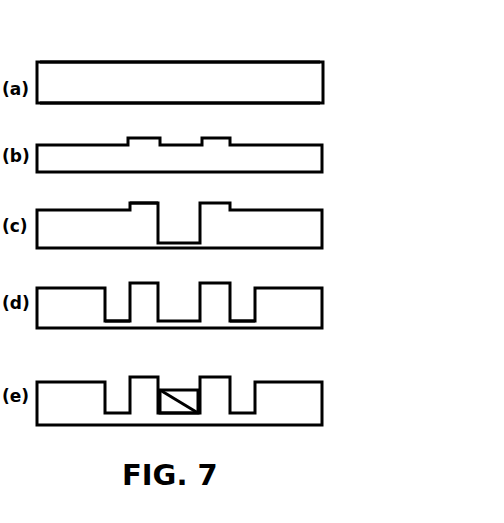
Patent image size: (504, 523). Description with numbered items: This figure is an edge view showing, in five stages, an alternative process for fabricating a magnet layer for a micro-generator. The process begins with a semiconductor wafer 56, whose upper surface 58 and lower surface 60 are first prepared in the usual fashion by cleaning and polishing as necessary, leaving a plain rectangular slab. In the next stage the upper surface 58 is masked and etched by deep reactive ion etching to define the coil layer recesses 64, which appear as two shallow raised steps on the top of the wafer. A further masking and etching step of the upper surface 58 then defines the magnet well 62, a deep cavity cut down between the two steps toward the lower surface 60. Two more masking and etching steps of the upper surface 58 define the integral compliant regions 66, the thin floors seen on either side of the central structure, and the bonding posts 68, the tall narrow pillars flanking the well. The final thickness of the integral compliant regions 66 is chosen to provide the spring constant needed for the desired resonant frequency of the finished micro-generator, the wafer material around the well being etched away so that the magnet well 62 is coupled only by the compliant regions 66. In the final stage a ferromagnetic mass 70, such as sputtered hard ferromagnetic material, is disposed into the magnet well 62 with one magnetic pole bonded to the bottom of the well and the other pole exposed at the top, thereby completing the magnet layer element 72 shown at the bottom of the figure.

The semiconductor wafer 56 is at (282, 80).
The upper surface 58 is at (162, 62).
The lower surface 60 is at (168, 102).
The magnet well 62 is at (178, 222).
The coil layer recesses 64 is at (293, 127).
The integral compliant regions 66 is at (118, 326).
The bonding posts 68 is at (137, 283).
The ferromagnetic mass 70 is at (177, 389).
The magnet layer element 72 is at (350, 403).